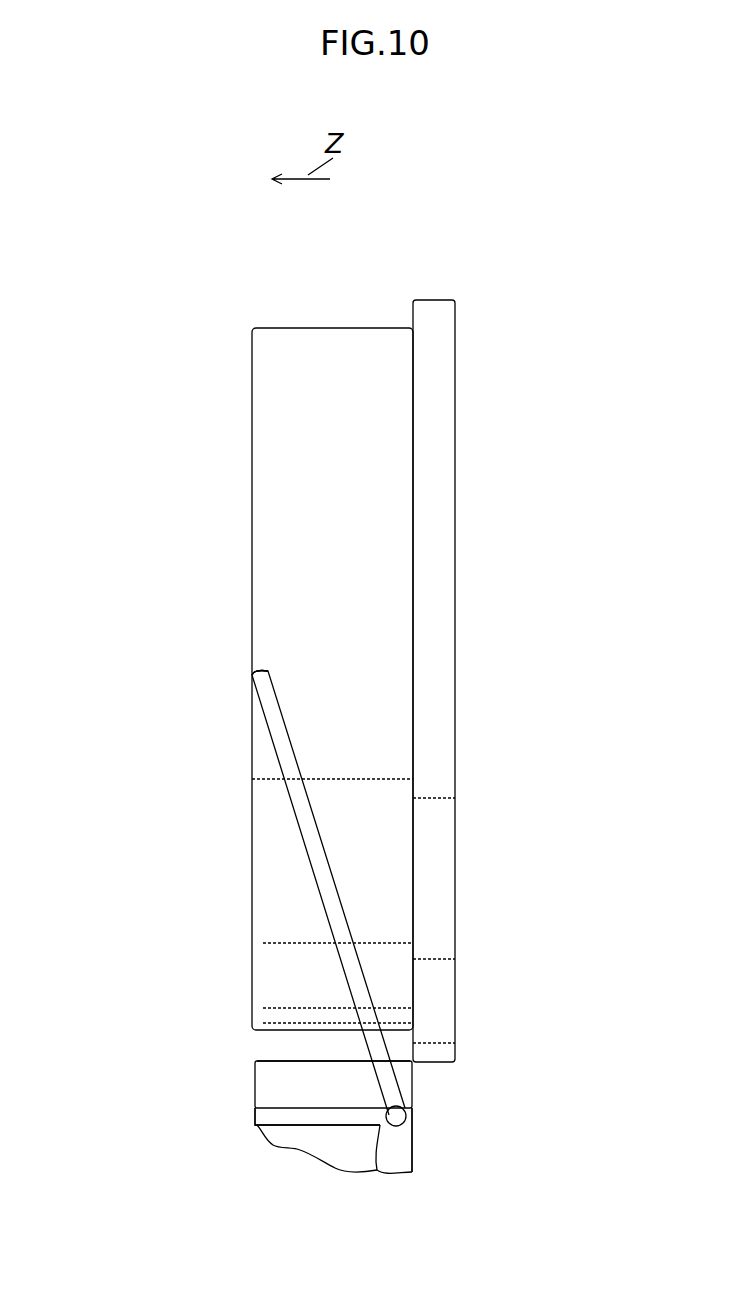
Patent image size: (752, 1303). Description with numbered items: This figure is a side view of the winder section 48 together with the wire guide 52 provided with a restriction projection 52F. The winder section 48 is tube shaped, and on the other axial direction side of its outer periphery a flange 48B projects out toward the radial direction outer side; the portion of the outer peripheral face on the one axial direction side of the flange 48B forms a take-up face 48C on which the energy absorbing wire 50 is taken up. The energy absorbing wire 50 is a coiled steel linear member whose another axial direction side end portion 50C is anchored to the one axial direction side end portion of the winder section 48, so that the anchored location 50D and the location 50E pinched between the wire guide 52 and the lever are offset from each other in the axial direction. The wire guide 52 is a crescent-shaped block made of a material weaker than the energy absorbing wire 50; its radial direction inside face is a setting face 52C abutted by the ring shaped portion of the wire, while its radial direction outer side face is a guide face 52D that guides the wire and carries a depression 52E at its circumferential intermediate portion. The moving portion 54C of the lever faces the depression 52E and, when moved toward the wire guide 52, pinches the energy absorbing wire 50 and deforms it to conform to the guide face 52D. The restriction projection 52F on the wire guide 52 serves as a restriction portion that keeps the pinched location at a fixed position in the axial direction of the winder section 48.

The winder section 48 is at (429, 624).
The flange 48B is at (432, 300).
The take-up face 48C is at (302, 328).
The energy absorbing wire 50 is at (331, 865).
The another axial direction side end portion 50C is at (258, 672).
The location where the energy absorbing wire is anchored to the winder section 50D is at (260, 673).
The location pinched between the wire guide and the lever 50E is at (412, 1123).
The wire guide 52 is at (354, 1102).
The setting face 52C is at (305, 1059).
The guide face 52D is at (262, 1124).
The depression 52E is at (317, 1116).
The restriction projection 52F is at (377, 1170).
The moving portion 54C is at (412, 1152).